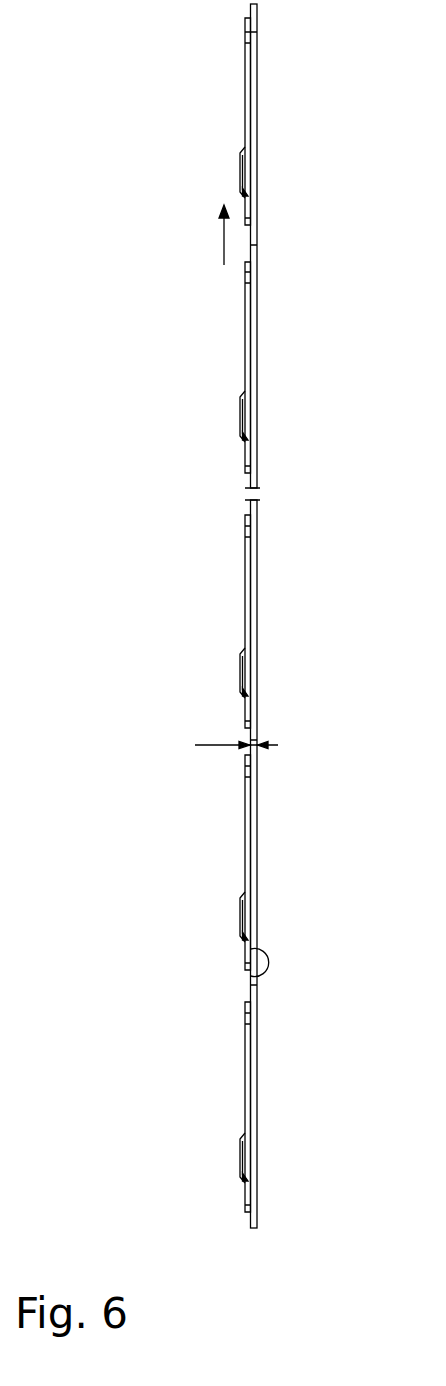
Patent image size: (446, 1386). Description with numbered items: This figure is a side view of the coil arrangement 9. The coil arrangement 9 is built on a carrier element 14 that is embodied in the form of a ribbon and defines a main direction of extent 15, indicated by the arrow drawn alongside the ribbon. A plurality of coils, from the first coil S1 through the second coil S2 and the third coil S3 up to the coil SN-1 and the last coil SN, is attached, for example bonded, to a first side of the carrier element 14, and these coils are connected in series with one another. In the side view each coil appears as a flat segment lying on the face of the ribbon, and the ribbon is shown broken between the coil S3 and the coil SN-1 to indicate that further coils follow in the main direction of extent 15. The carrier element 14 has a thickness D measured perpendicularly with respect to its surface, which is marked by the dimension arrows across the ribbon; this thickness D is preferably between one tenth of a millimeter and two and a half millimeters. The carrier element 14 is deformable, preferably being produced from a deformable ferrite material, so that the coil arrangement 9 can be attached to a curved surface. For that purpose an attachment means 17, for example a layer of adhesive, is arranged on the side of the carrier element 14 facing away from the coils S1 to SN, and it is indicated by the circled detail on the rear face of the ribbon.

The coil arrangement 9 is at (146, 514).
The coil SN is at (247, 128).
The coil SN-1 is at (247, 363).
The coil S3 is at (247, 613).
The coil S2 is at (247, 864).
The coil S1 is at (247, 1113).
The main direction of extent 15 is at (224, 236).
The carrier element 14 is at (247, 680).
The attachment means 17 is at (251, 976).
The thickness D is at (236, 732).